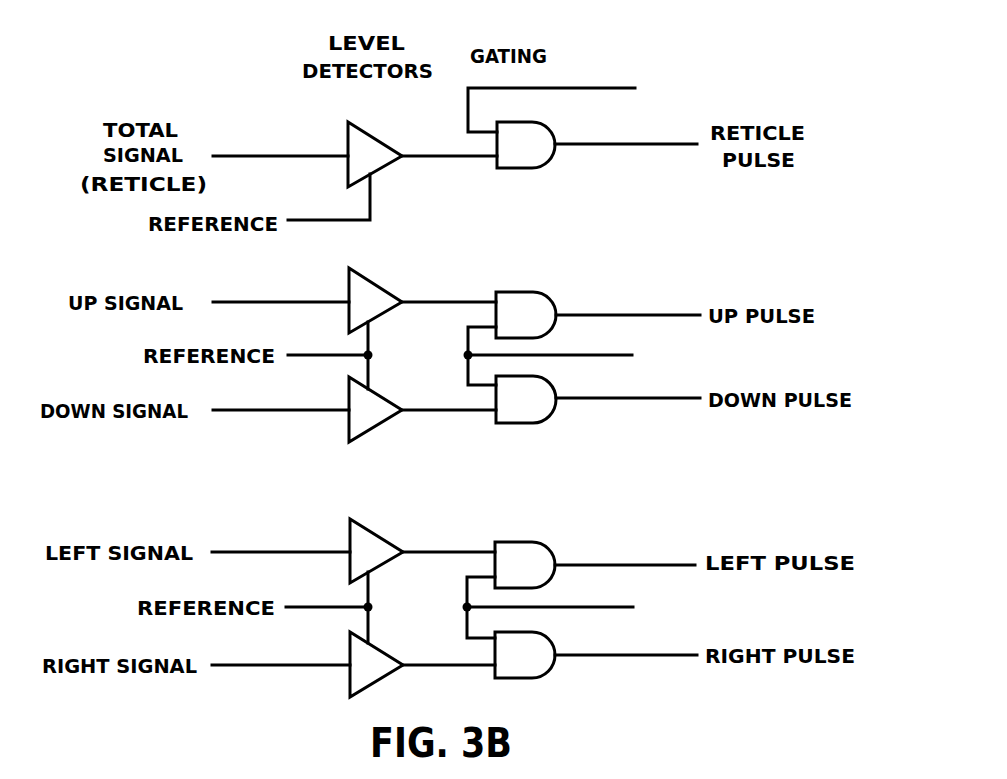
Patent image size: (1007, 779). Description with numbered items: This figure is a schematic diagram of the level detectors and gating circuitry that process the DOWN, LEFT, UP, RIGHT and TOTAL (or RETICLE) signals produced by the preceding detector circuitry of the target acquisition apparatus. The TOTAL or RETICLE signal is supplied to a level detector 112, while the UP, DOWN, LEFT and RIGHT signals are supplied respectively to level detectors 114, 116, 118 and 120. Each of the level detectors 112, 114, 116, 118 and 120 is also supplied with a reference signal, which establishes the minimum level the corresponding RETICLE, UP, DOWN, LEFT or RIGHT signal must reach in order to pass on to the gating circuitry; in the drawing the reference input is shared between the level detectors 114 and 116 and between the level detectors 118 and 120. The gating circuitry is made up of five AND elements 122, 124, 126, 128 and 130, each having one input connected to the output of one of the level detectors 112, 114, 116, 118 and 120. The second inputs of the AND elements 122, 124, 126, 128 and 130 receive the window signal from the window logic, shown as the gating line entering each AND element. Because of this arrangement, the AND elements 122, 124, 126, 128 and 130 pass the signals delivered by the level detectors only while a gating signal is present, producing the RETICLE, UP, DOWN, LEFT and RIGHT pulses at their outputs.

The level detector 112 is at (374, 135).
The level detector 114 is at (371, 282).
The level detector 116 is at (381, 396).
The level detector 118 is at (372, 533).
The level detector 120 is at (378, 648).
The AND element 122 is at (543, 122).
The AND element 124 is at (538, 291).
The AND element 126 is at (537, 423).
The AND element 128 is at (534, 542).
The AND element 130 is at (533, 678).